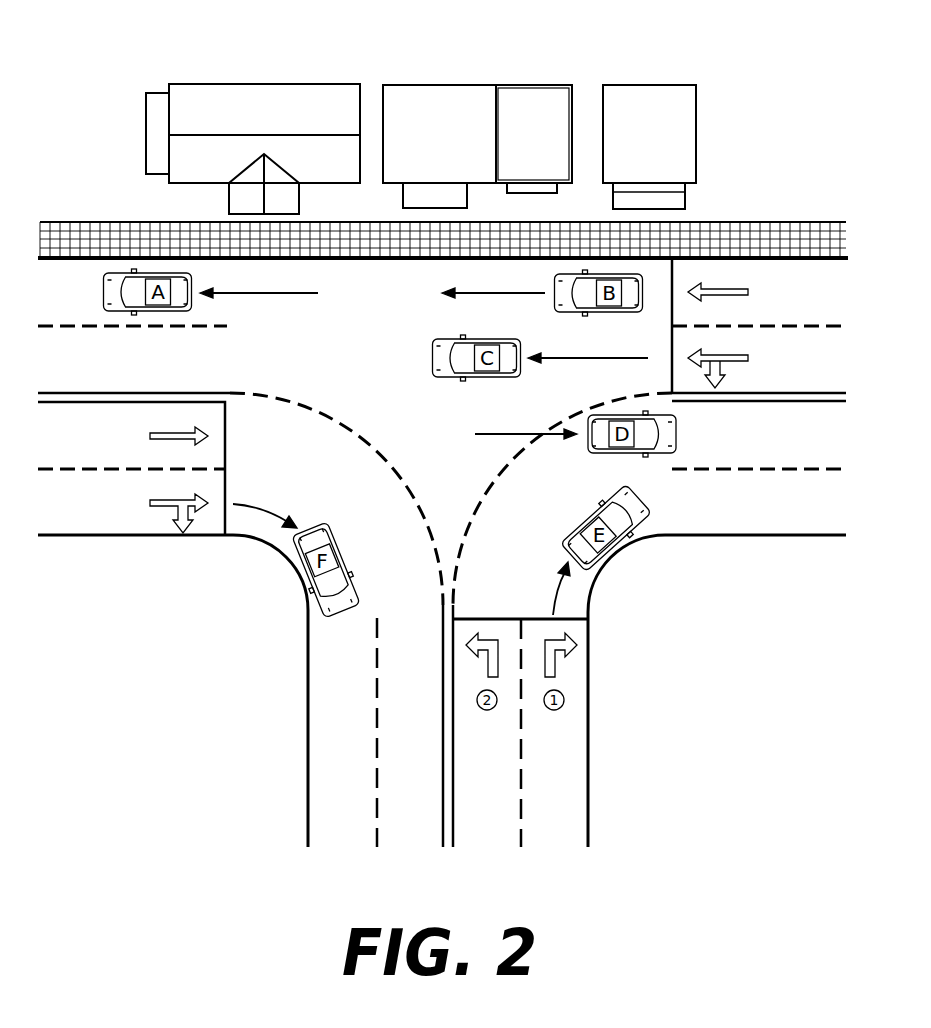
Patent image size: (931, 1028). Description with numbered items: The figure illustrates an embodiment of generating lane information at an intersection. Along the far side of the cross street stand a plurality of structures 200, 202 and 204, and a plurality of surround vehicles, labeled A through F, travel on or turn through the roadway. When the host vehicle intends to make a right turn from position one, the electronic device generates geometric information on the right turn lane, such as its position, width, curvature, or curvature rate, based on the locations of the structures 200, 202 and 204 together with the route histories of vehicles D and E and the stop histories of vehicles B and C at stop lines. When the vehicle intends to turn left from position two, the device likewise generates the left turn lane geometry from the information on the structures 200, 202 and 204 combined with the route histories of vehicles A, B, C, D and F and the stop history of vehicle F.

The structure 200 is at (272, 90).
The structure 202 is at (440, 90).
The structure 204 is at (648, 90).